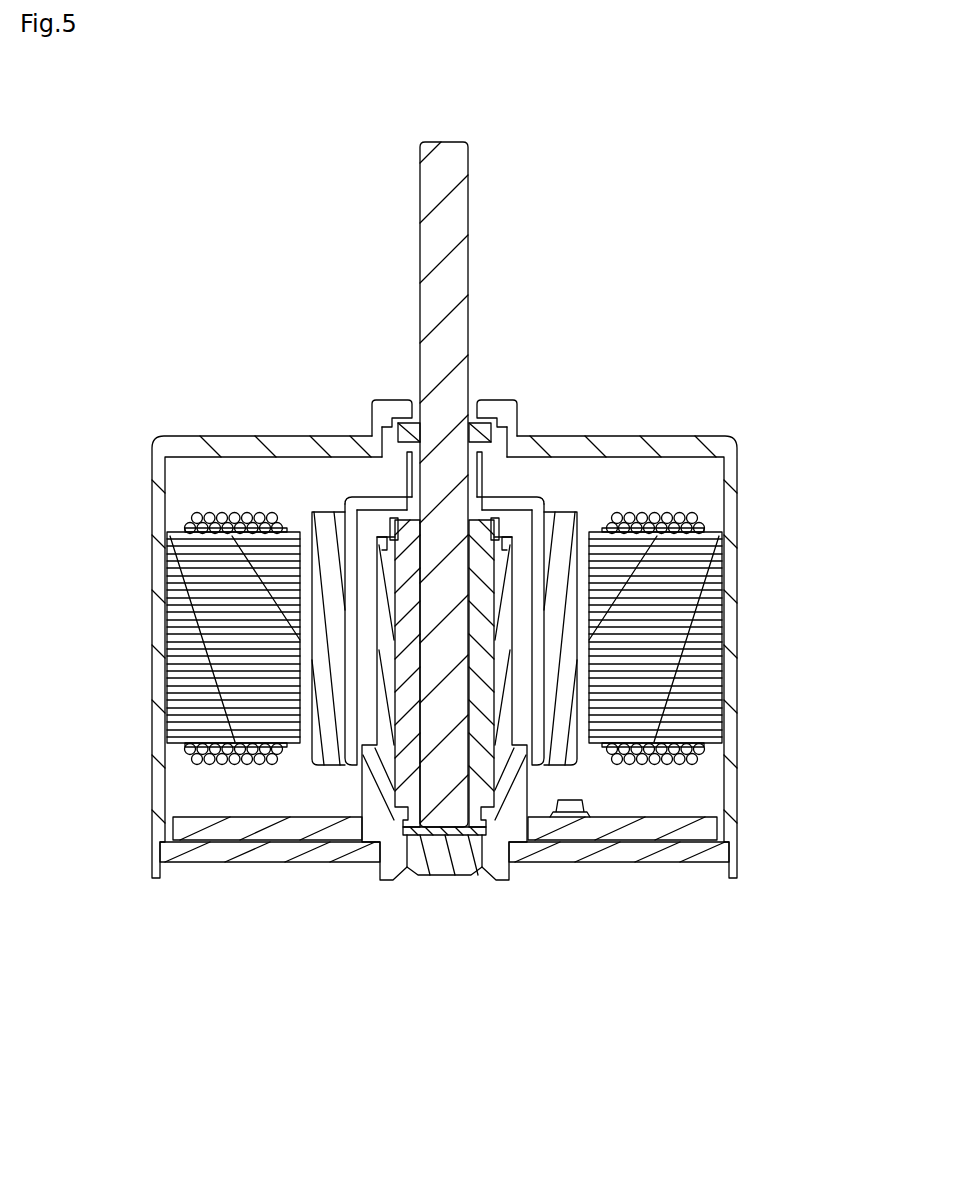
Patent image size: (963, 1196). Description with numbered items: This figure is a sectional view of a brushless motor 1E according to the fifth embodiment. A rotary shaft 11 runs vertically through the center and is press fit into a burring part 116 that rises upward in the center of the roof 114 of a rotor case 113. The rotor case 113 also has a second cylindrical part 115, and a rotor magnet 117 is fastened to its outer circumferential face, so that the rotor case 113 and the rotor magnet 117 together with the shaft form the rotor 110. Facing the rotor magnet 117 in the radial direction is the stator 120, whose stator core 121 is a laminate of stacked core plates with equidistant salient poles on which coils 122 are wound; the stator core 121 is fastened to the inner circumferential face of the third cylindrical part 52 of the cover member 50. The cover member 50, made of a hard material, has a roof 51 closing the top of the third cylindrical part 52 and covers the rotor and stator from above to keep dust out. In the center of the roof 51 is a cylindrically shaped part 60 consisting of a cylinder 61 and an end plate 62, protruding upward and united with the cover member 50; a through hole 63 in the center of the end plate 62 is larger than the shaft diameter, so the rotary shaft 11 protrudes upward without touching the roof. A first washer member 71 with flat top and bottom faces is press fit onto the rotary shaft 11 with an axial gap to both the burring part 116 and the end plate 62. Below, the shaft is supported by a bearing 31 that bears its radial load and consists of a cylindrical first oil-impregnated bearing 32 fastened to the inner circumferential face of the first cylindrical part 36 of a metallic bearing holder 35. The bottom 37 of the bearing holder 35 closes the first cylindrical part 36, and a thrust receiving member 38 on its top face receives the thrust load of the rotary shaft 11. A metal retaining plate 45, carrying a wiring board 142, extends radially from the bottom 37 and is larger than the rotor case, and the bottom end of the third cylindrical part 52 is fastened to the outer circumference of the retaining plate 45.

The brushless motor 1E is at (609, 280).
The rotary shaft 11 is at (466, 216).
The cover member 50 is at (730, 494).
The roof 51 is at (268, 447).
The third cylindrical part 52 is at (730, 680).
The cylindrically shaped part 60 is at (383, 407).
The cylinder 61 is at (373, 430).
The end plate 62 is at (395, 405).
The through hole 63 is at (474, 407).
The first washer member 71 is at (488, 431).
The rotor 110 is at (601, 484).
The rotor case 113 is at (540, 497).
The roof 114 is at (413, 475).
The second cylindrical part 115 is at (347, 630).
The burring part 116 is at (377, 503).
The rotor magnet 117 is at (333, 562).
The stator 120 is at (713, 783).
The stator core 121 is at (700, 583).
The coils 122 is at (228, 512).
The wiring board 142 is at (222, 832).
The retaining plate 45 is at (680, 852).
The first cylindrical part 36 is at (500, 745).
The bearing holder 35 is at (407, 855).
The first oil-impregnated bearing 32 is at (392, 738).
The bearing 31 is at (501, 534).
The thrust receiving member 38 is at (470, 876).
The bottom 37 is at (435, 858).